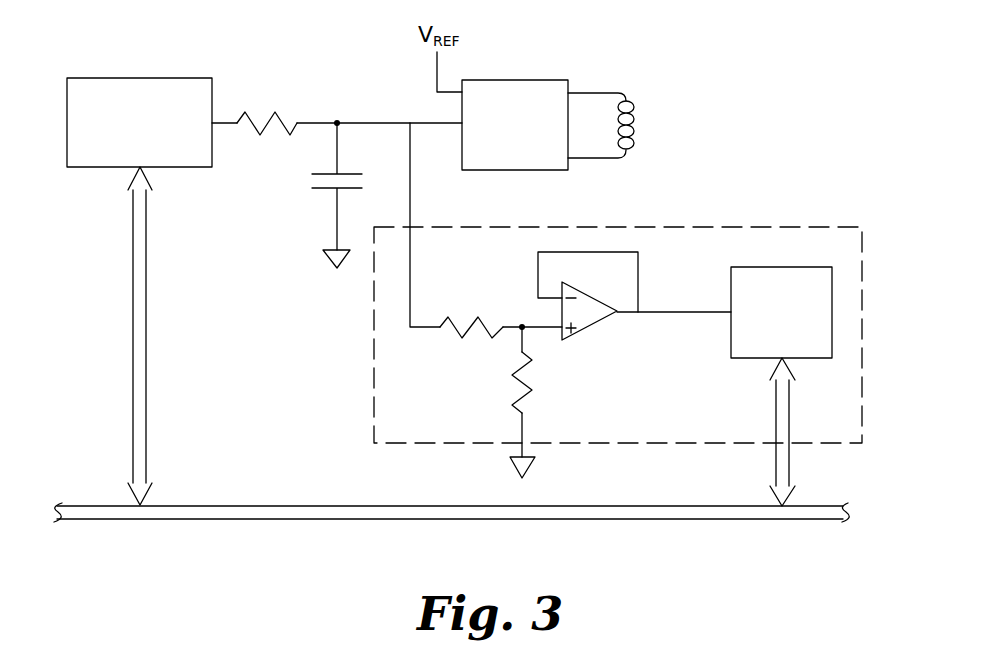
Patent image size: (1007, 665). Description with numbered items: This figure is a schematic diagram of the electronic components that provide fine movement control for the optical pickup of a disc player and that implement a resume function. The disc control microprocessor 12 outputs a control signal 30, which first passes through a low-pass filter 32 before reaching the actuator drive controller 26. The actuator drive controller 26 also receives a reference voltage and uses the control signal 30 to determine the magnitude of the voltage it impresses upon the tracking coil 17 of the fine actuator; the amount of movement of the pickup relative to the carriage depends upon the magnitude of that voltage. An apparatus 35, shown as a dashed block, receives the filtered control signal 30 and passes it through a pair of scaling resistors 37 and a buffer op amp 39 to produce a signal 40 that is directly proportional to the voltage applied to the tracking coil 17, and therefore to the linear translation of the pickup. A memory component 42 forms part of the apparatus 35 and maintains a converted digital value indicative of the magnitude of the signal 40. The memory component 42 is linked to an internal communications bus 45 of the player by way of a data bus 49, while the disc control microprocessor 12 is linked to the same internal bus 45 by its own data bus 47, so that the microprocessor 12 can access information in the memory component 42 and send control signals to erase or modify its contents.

The disc control microprocessor 12 is at (143, 78).
The control signal 30 is at (226, 124).
The low-pass filter 32 is at (289, 116).
The actuator drive controller 26 is at (548, 80).
The tracking coil 17 is at (633, 155).
The apparatus 35 is at (765, 227).
The scaling resistors 37 is at (450, 322).
The buffer op amp 39 is at (597, 336).
The signal 40 is at (680, 312).
The memory component 42 is at (833, 312).
The data bus 47 is at (140, 367).
The data bus 49 is at (783, 466).
The internal communications bus 45 is at (460, 510).